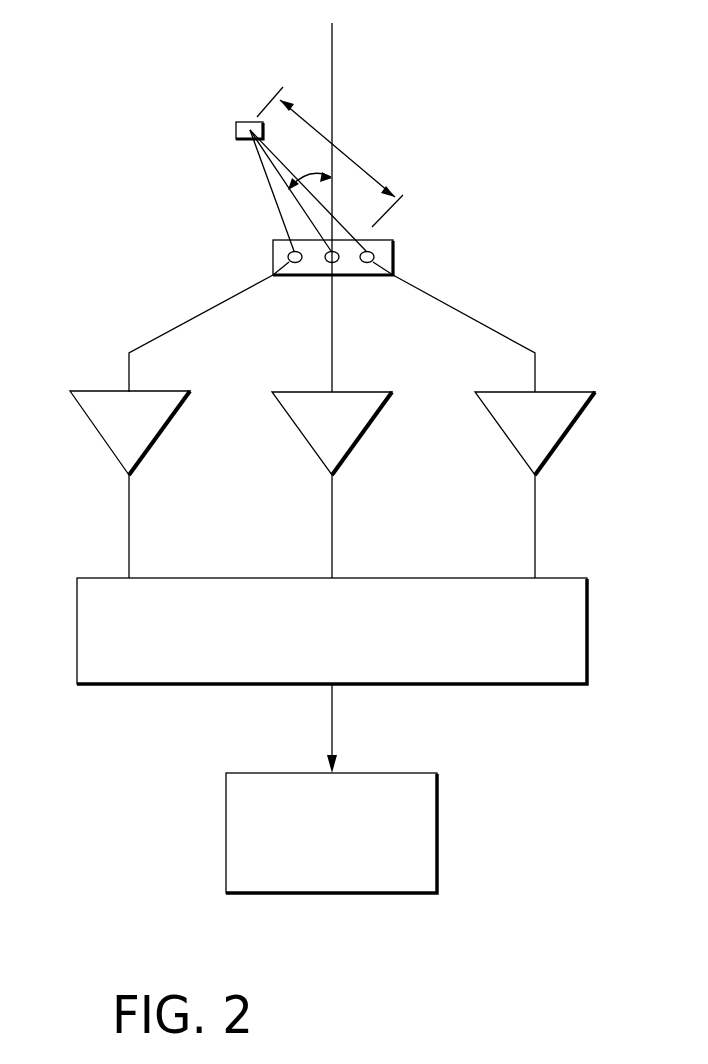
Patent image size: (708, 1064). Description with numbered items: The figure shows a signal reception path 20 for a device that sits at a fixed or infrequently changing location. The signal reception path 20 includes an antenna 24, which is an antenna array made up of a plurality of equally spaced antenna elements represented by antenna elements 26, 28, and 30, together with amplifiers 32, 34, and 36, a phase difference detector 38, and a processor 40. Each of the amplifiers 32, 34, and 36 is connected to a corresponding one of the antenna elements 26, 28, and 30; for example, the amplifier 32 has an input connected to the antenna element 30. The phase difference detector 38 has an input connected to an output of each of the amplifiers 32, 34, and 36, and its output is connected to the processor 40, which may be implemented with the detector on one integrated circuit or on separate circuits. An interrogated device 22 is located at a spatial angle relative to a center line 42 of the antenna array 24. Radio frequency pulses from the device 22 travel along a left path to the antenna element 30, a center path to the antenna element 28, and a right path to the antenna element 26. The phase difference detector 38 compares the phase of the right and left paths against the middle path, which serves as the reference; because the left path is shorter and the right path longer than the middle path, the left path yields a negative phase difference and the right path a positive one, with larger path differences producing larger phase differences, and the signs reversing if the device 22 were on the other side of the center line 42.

The signal reception path 20 is at (579, 234).
The interrogated device 22 is at (235, 131).
The antenna 24 is at (395, 257).
The antenna element 26 is at (373, 276).
The antenna element 28 is at (339, 276).
The antenna element 30 is at (297, 276).
The amplifier 32 is at (96, 428).
The amplifier 34 is at (298, 428).
The amplifier 36 is at (500, 428).
The phase difference detector 38 is at (77, 632).
The processor 40 is at (226, 835).
The center line 42 is at (333, 43).